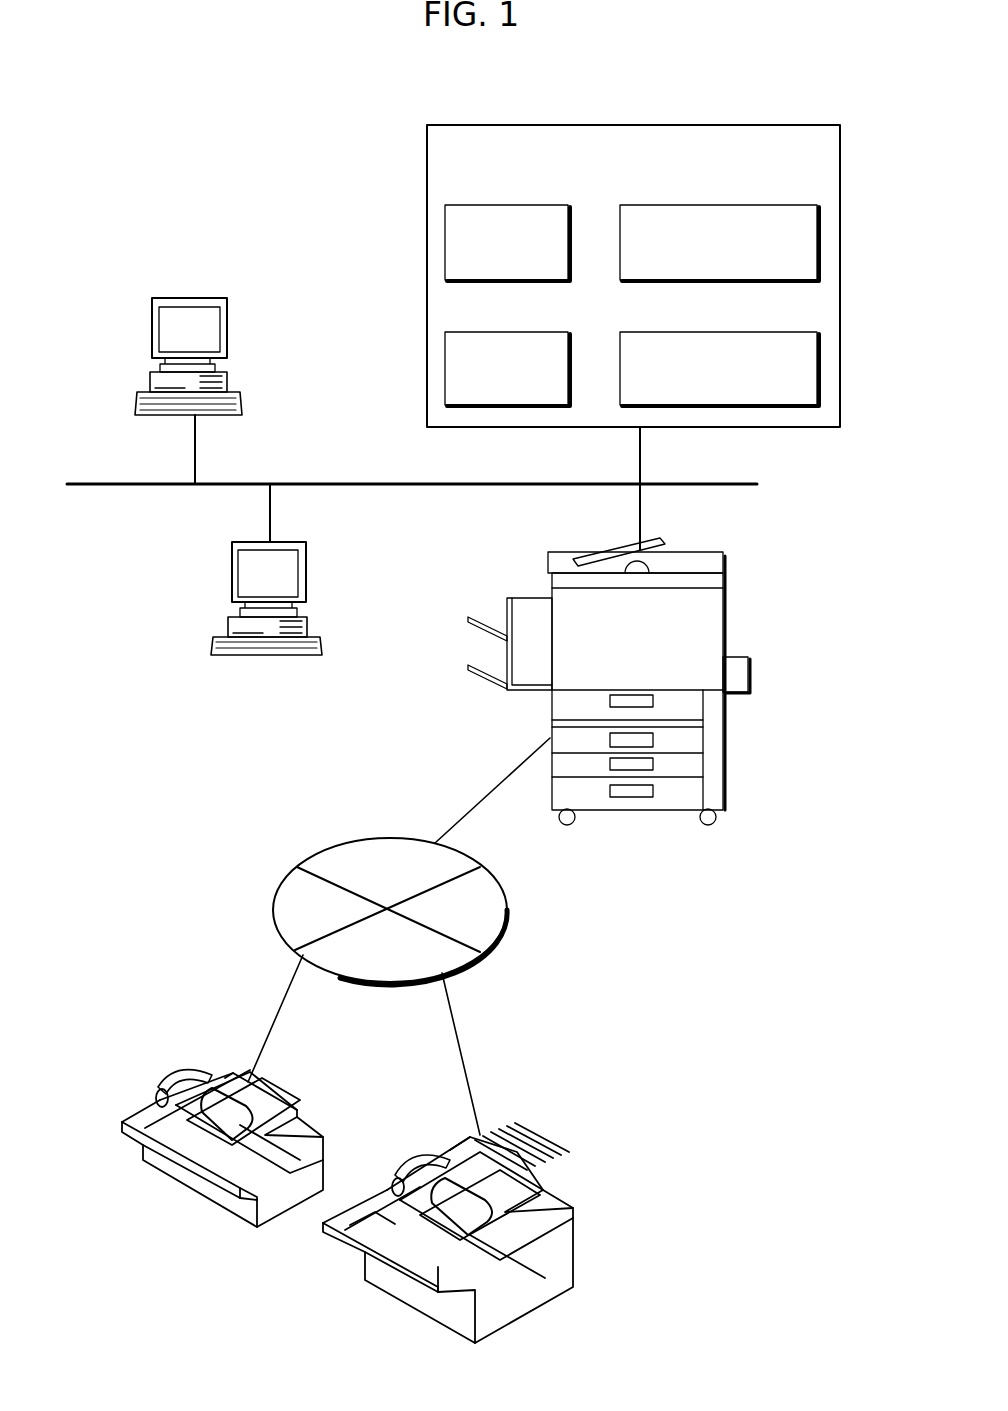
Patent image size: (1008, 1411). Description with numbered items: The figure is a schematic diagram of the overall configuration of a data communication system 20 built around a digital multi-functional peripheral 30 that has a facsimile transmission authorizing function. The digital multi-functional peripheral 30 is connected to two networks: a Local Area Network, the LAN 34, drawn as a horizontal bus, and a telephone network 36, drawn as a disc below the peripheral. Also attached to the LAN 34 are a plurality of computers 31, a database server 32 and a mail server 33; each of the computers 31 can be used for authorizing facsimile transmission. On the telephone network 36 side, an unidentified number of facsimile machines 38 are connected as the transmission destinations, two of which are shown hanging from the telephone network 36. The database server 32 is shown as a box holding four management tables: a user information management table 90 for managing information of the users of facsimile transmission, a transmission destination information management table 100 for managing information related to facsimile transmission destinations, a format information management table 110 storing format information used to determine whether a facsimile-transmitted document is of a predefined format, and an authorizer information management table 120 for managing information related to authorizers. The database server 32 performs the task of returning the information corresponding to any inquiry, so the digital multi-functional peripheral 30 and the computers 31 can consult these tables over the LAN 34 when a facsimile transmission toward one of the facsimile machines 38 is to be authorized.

The data communication system 20 is at (276, 160).
The digital multi-functional peripheral 30 is at (728, 625).
The computers 31 is at (228, 325).
The database server 32 is at (740, 125).
The mail server 33 is at (308, 570).
The LAN 34 is at (690, 478).
The telephone network 36 is at (490, 875).
The facsimile machines 38 is at (263, 1082).
The user information management table 90 is at (512, 205).
The transmission destination information management table 100 is at (757, 205).
The format information management table 110 is at (518, 332).
The authorizer information management table 120 is at (757, 332).